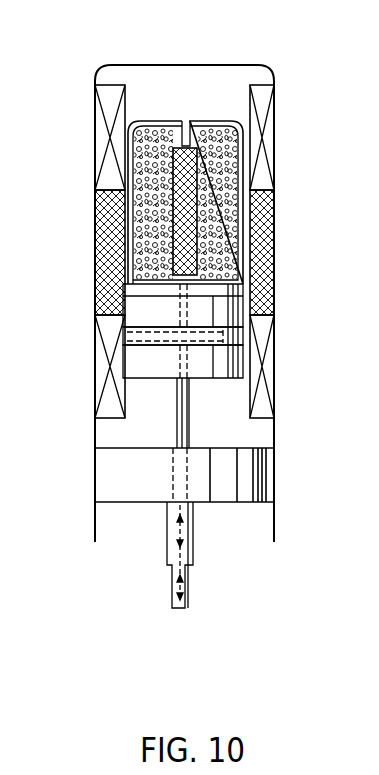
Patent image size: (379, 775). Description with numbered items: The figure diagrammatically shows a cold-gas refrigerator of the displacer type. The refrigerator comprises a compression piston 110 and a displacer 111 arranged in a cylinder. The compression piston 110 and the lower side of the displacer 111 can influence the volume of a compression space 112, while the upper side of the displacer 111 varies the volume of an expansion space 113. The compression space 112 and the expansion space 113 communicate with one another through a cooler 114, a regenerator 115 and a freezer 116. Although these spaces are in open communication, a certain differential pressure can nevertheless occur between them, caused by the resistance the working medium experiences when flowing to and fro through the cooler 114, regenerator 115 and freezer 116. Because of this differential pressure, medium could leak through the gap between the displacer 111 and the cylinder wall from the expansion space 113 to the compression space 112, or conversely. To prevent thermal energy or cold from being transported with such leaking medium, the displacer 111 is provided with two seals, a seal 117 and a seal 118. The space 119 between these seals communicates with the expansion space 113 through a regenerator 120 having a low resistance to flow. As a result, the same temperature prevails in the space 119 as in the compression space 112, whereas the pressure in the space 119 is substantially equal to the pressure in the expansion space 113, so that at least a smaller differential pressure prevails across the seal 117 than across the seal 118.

The compression piston 110 is at (245, 474).
The displacer 111 is at (243, 202).
The compression space 112 is at (220, 431).
The expansion space 113 is at (205, 98).
The cooler 114 is at (262, 365).
The regenerator 115 is at (260, 235).
The freezer 116 is at (268, 133).
The seal 117 is at (123, 297).
The seal 118 is at (123, 358).
The space between the seals 119 is at (123, 335).
The regenerator with a low resistance to flow 120 is at (180, 163).